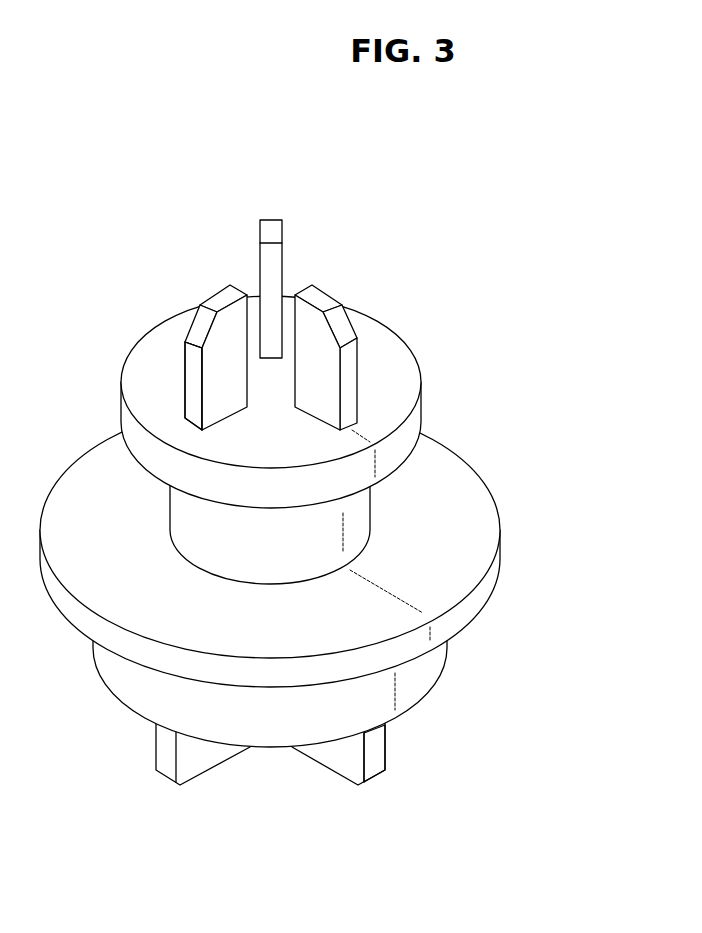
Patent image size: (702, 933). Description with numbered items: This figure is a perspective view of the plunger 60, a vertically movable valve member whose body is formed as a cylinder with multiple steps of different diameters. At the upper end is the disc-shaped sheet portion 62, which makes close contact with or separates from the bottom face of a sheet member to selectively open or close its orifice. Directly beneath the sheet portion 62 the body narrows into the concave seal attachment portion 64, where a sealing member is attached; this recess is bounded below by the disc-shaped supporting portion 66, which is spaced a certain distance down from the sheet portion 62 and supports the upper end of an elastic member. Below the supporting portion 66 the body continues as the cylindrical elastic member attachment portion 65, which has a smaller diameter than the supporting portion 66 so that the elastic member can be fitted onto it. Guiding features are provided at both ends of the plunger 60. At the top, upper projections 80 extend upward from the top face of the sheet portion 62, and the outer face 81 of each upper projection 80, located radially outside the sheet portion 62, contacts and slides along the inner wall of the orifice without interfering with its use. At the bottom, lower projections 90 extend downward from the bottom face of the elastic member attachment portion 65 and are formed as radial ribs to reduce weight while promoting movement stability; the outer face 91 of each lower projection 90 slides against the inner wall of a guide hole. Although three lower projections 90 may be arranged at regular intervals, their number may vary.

The plunger 60 is at (287, 158).
The sheet portion 62 is at (393, 370).
The seal attachment portion 64 is at (360, 523).
The supporting portion 66 is at (467, 610).
The elastic member attachment portion 65 is at (418, 680).
The upper projection 80 is at (208, 289).
The outer face of upper projection 81 is at (192, 367).
The lower projection 90 is at (335, 786).
The outer face of lower projection 91 is at (377, 757).